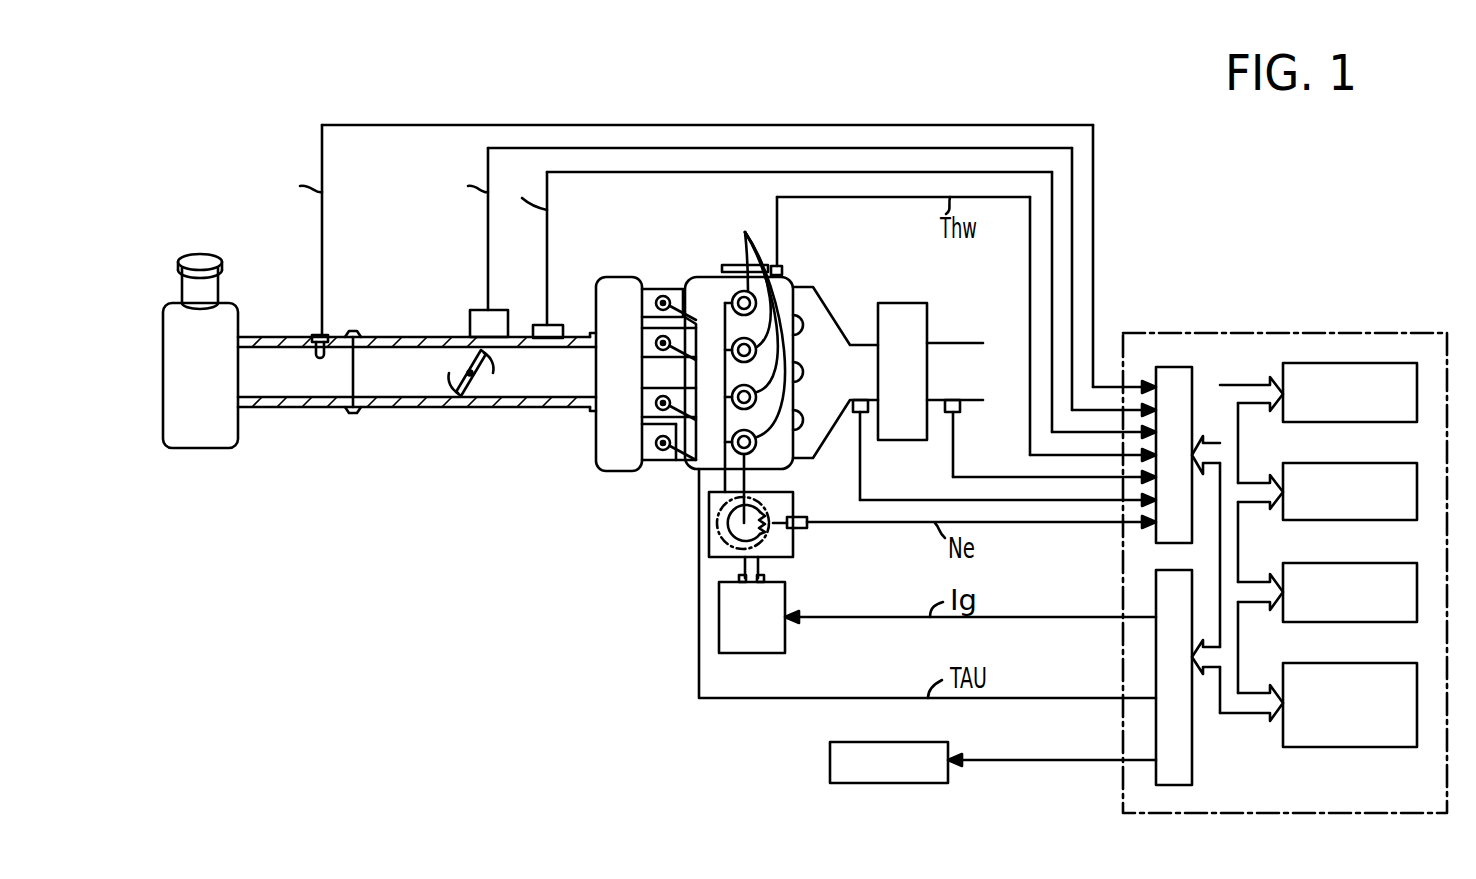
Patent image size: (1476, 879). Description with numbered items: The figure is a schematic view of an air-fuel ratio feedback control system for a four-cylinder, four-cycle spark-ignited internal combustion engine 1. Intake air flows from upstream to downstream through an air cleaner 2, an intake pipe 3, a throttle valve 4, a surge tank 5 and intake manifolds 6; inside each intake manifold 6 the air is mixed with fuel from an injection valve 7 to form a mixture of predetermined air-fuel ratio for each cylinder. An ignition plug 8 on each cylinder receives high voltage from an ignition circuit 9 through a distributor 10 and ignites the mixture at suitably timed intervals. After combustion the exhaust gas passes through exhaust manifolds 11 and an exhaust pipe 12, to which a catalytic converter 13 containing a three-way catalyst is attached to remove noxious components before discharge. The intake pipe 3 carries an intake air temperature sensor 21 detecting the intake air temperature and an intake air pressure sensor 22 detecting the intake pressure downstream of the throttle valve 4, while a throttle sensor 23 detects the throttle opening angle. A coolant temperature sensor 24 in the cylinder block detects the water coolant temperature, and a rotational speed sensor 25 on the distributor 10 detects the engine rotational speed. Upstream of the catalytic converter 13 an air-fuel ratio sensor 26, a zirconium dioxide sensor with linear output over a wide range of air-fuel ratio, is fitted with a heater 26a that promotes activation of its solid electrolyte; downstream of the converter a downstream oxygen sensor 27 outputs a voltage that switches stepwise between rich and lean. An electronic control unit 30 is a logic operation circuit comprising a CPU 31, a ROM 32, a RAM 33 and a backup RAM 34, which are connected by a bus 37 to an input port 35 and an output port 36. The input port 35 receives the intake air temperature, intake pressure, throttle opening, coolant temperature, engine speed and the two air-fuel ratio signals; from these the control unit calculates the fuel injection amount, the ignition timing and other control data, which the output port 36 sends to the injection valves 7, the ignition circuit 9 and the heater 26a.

The internal combustion engine 1 is at (705, 277).
The air cleaner 2 is at (208, 448).
The intake pipe 3 is at (397, 337).
The throttle valve 4 is at (470, 396).
The surge tank 5 is at (617, 285).
The intake manifolds 6 is at (676, 289).
The injection valve 7 is at (657, 337).
The ignition plug 8 is at (753, 318).
The ignition circuit 9 is at (785, 640).
The distributor 10 is at (709, 548).
The exhaust manifolds 11 is at (823, 305).
The exhaust pipe 12 is at (864, 345).
The catalytic converter 13 is at (927, 320).
The intake air temperature sensor 21 is at (322, 335).
The intake air pressure sensor 22 is at (550, 325).
The throttle sensor 23 is at (476, 310).
The coolant temperature sensor 24 is at (782, 266).
The rotational speed sensor 25 is at (800, 530).
The air-fuel ratio sensor 26 is at (856, 416).
The heater 26a is at (830, 762).
The downstream oxygen sensor 27 is at (962, 407).
The electronic control unit 30 is at (1261, 333).
The CPU 31 is at (1364, 363).
The ROM 32 is at (1385, 463).
The RAM 33 is at (1385, 563).
The backup RAM 34 is at (1385, 663).
The input port 35 is at (1173, 367).
The output port 36 is at (1175, 785).
The bus 37 is at (1248, 713).